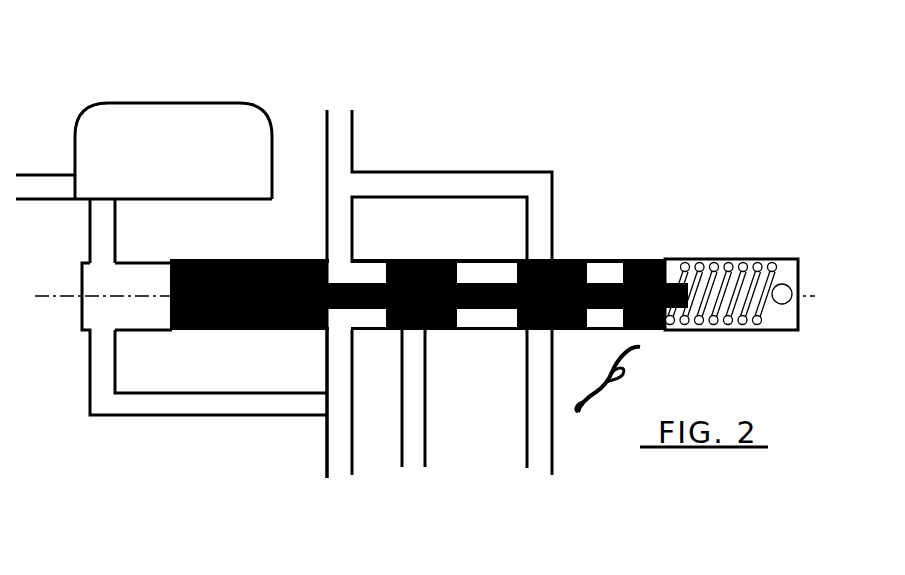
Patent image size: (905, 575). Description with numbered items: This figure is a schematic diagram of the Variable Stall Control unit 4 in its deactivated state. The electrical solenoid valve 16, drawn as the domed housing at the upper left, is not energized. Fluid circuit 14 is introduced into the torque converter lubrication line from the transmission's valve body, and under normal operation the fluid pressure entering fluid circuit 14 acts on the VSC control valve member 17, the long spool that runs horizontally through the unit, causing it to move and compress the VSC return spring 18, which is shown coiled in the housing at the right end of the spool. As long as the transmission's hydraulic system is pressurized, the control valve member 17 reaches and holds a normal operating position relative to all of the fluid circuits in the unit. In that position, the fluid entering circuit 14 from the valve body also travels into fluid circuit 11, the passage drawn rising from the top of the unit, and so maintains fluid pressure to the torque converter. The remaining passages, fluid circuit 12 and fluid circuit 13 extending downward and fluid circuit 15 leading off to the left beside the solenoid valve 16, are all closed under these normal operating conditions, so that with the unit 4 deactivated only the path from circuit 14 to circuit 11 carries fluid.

The Variable Stall Control unit 4 is at (613, 380).
The fluid circuit 11 is at (339, 127).
The fluid circuit 12 is at (537, 458).
The fluid circuit 13 is at (410, 458).
The fluid circuit 14 is at (342, 463).
The fluid circuit 15 is at (22, 187).
The electrical solenoid valve 16 is at (132, 130).
The VSC control valve member 17 is at (568, 260).
The VSC return spring 18 is at (720, 258).